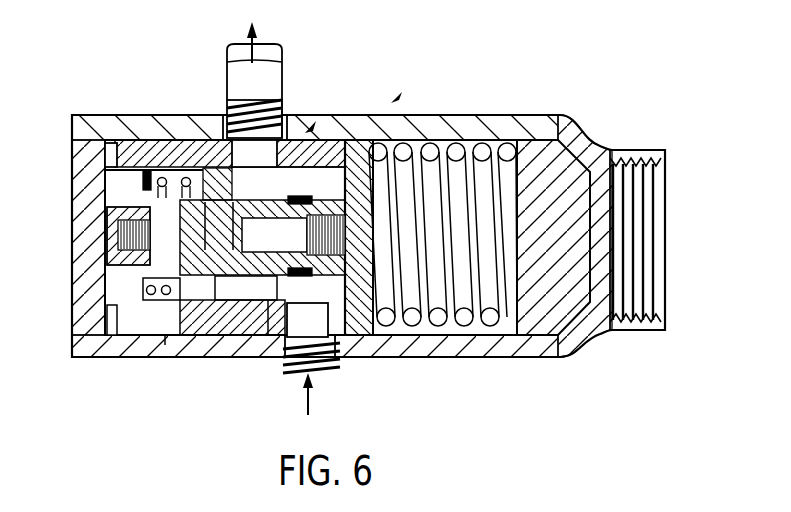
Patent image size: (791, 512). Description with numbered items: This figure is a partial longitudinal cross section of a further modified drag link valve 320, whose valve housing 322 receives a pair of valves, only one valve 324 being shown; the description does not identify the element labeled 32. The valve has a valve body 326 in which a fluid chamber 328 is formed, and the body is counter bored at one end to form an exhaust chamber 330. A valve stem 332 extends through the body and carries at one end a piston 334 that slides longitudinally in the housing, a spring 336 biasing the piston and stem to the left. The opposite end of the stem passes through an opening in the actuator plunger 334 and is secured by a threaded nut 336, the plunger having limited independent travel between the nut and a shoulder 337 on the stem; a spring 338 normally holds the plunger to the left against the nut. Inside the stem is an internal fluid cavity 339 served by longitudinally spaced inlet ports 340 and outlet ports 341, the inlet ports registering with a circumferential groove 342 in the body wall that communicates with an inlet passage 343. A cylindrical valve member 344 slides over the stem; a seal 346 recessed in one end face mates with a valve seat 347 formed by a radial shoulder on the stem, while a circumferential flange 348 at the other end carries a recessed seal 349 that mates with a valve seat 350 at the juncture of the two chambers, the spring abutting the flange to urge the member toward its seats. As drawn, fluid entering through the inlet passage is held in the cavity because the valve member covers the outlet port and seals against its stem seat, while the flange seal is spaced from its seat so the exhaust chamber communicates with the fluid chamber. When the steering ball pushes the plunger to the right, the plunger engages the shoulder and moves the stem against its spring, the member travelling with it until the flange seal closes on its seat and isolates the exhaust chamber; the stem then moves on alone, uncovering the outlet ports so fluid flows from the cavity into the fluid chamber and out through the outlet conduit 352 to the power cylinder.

The housing 32 is at (368, 222).
The valve 320 is at (395, 100).
The valve housing 322 is at (443, 131).
The valve 324 is at (308, 131).
The valve body 326 is at (118, 150).
The fluid chamber 328 is at (254, 155).
The exhaust chamber 330 is at (145, 172).
The valve stem 332 is at (120, 237).
The piston (actuator plunger) 334 is at (115, 287).
The spring (threaded nut) 336 is at (118, 224).
The shoulder 337 is at (118, 267).
The spring 338 is at (158, 181).
The internal fluid cavity 339 is at (297, 246).
The inlet ports 340 is at (298, 186).
The outlet ports 341 is at (240, 278).
The circumferential groove 342 is at (296, 180).
The inlet passage 343 is at (293, 375).
The cylindrical valve member 344 is at (182, 318).
The seal 346 is at (268, 320).
The valve seat 347 is at (243, 219).
The circumferential flange 348 is at (185, 298).
The recessed seal 349 is at (211, 173).
The valve seat 350 is at (212, 177).
The outlet conduit 352 is at (285, 87).